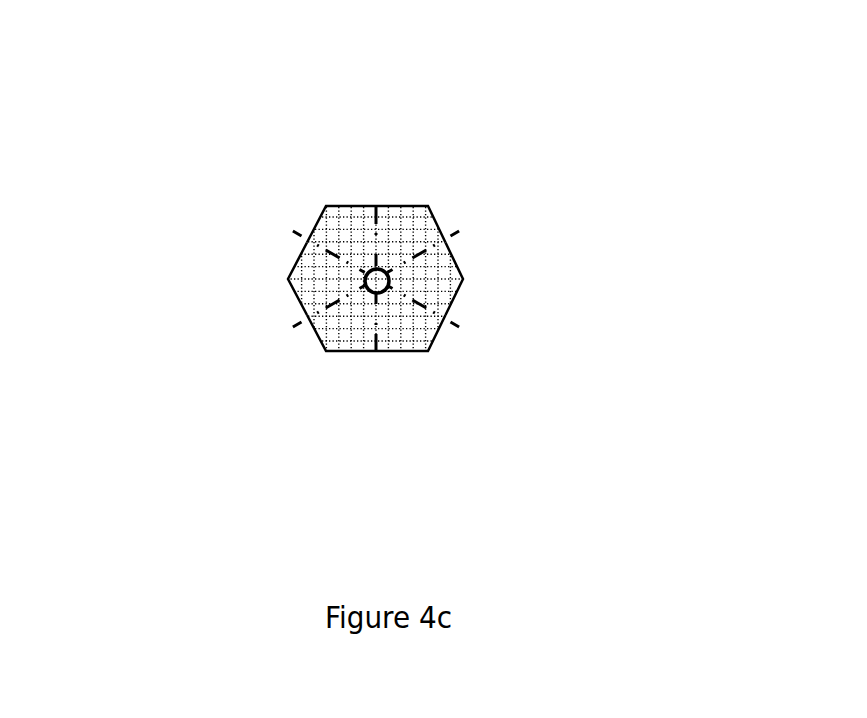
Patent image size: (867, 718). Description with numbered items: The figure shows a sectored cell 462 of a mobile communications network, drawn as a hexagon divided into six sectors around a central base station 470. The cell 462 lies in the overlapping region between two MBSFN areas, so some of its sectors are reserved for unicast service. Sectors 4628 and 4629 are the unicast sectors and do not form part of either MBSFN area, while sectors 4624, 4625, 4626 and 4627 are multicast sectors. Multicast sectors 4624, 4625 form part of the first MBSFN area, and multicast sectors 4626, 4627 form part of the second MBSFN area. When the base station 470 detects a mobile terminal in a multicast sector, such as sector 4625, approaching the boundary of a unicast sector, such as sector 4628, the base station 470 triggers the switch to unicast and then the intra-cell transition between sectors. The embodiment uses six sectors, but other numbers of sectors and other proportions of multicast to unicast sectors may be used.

The cell 462 is at (303, 302).
The base station 470 is at (382, 283).
The multicast sector 4624 is at (315, 262).
The multicast sector 4625 is at (335, 332).
The multicast sector 4626 is at (410, 220).
The multicast sector 4627 is at (440, 268).
The unicast sector 4628 is at (362, 218).
The unicast sector 4629 is at (397, 338).